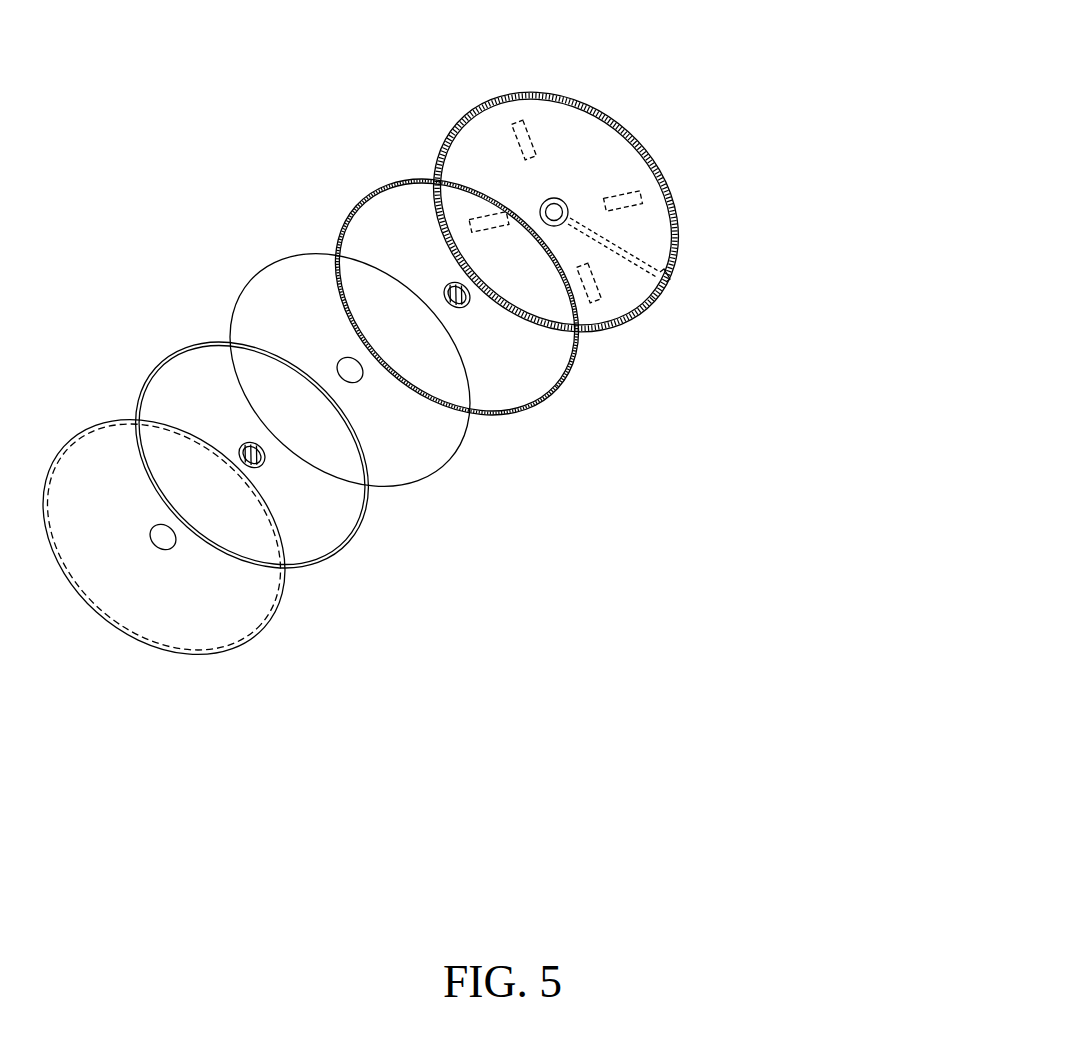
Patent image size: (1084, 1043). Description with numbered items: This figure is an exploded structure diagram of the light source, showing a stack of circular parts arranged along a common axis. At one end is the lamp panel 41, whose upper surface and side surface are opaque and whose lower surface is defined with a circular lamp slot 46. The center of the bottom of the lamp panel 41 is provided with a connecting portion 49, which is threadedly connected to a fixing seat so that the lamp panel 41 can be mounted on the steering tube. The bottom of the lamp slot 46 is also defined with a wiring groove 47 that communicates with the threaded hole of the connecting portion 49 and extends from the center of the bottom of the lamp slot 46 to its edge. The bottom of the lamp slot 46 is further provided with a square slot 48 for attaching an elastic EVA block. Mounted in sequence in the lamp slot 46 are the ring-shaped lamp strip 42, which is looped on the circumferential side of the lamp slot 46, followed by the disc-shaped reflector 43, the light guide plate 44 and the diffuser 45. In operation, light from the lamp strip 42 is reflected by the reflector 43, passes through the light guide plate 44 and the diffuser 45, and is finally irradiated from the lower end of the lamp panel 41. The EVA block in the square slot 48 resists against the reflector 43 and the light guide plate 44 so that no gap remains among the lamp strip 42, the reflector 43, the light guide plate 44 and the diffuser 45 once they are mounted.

The lamp panel 41 is at (672, 198).
The lamp strip 42 is at (567, 353).
The reflector 43 is at (457, 453).
The light guide plate 44 is at (353, 537).
The diffuser 45 is at (275, 615).
The lamp slot 46 is at (625, 172).
The wiring groove 47 is at (675, 273).
The square slot 48 is at (637, 193).
The connecting portion 49 is at (563, 197).